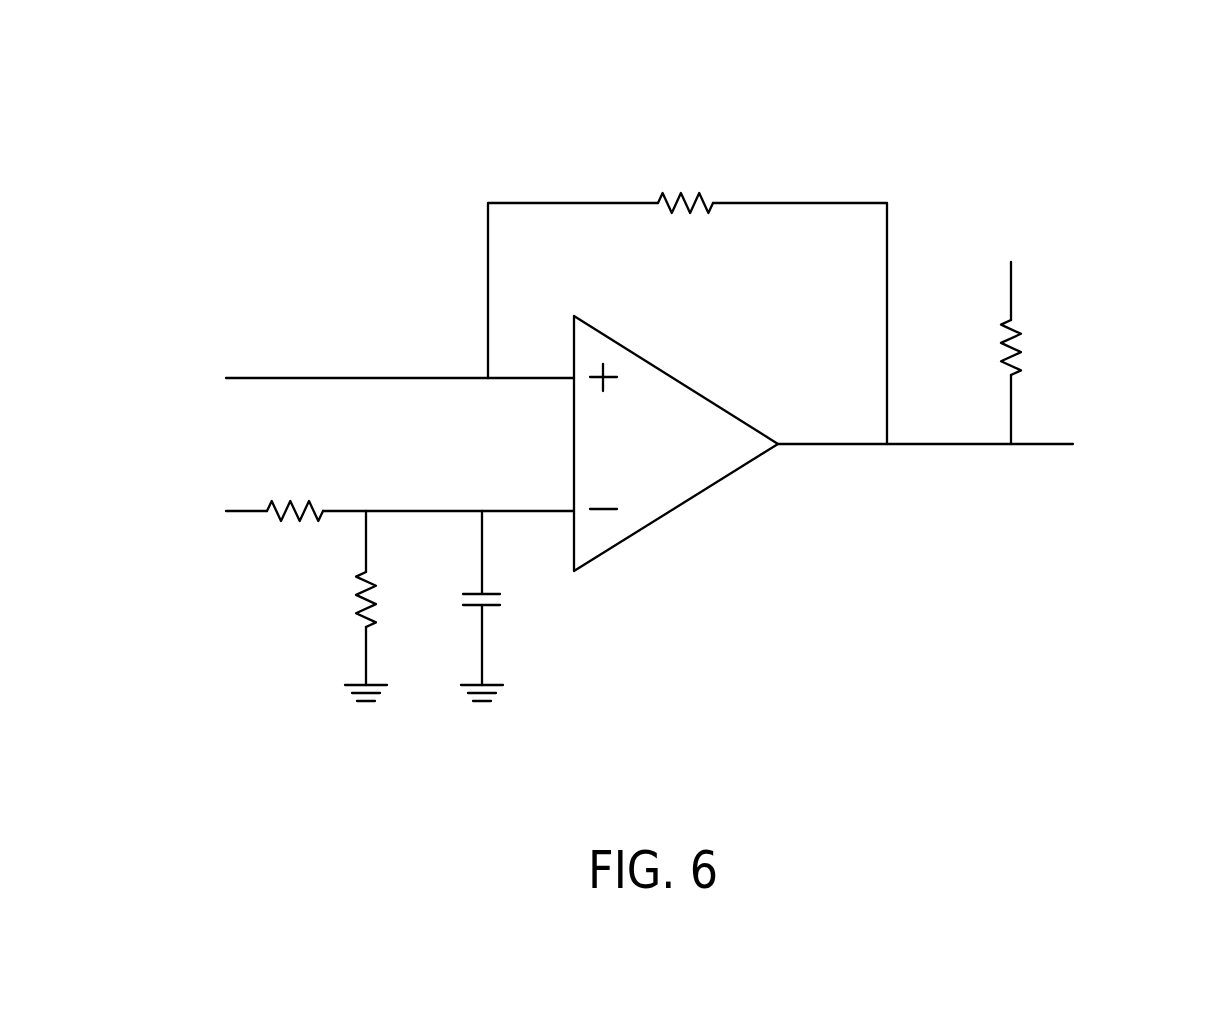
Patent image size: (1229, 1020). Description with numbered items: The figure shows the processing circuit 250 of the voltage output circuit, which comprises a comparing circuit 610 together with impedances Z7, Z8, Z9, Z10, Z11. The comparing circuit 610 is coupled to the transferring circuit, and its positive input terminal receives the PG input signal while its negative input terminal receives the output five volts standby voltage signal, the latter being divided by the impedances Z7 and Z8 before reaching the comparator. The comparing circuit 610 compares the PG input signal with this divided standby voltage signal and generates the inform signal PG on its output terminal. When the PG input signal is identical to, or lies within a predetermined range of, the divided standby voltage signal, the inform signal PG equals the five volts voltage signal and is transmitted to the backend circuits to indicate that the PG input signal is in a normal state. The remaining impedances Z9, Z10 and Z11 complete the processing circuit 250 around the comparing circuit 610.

The processing circuit 250 is at (670, 377).
The comparing circuit 610 is at (677, 378).
The impedance Z7 is at (295, 490).
The impedance Z8 is at (378, 606).
The impedance Z9 is at (498, 606).
The impedance Z10 is at (687, 301).
The impedance Z11 is at (1035, 353).